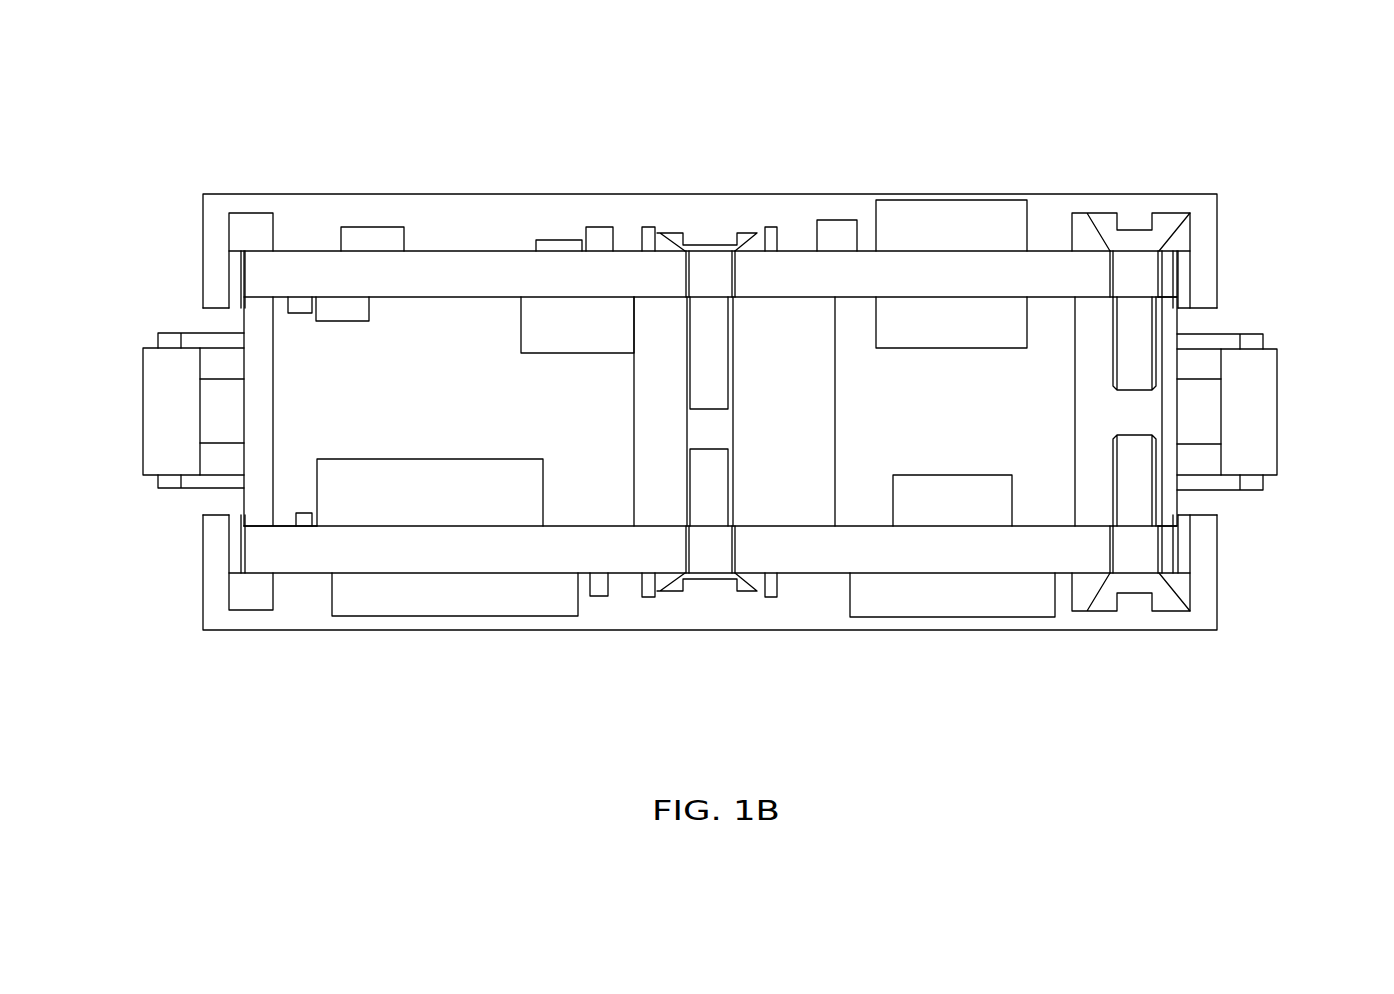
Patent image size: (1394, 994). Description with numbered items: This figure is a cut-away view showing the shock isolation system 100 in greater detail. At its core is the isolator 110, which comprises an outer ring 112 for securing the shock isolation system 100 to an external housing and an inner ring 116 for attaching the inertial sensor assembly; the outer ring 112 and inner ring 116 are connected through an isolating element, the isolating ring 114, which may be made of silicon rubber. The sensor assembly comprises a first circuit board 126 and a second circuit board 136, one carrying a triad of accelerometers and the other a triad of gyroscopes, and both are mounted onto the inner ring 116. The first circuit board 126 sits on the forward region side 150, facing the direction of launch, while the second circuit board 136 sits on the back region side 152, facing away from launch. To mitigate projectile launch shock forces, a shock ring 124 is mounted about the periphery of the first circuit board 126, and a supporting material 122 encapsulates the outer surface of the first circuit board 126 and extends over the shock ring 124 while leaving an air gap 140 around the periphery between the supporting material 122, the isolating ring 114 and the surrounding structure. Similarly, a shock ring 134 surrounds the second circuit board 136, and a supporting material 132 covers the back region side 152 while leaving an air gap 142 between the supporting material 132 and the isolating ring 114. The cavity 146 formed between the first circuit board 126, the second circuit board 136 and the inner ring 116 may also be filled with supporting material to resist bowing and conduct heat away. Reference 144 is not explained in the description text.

The shock isolation system 100 is at (525, 695).
The isolator 110 is at (128, 398).
The outer ring 112 is at (142, 440).
The isolating ring 114 is at (233, 410).
The inner ring 116 is at (267, 449).
The supporting material 122 is at (512, 193).
The shock ring 124 is at (250, 230).
The first circuit board 126 is at (965, 268).
The supporting material 132 is at (622, 630).
The shock ring 134 is at (253, 600).
The second circuit board 136 is at (992, 553).
The air gap 140 is at (202, 320).
The air gap 142 is at (202, 500).
The fastener bracket 144 is at (745, 232).
The cavity 146 is at (505, 430).
The forward region side 150 is at (662, 145).
The back region side 152 is at (880, 647).